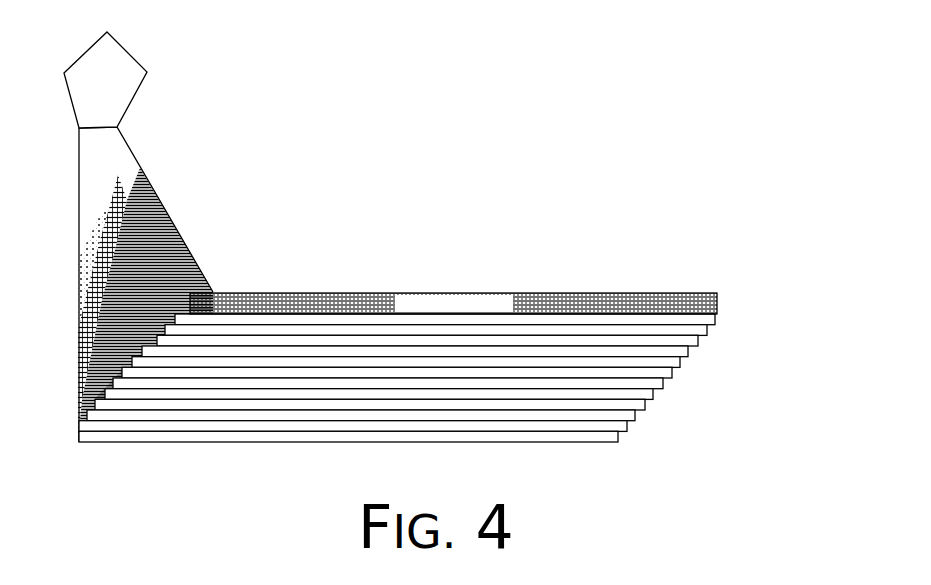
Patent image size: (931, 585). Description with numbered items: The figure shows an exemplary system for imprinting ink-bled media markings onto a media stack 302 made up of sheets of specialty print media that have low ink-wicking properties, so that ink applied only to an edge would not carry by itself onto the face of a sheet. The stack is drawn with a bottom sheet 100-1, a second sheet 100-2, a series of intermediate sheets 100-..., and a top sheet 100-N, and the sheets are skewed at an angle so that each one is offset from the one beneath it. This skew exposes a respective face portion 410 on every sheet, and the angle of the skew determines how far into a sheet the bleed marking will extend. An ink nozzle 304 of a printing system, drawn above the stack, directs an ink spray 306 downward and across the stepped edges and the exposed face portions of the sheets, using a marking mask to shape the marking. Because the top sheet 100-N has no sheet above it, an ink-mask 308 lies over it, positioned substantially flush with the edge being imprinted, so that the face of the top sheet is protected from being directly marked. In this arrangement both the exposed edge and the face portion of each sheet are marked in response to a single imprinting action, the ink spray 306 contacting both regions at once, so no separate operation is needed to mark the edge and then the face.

The ink nozzle 304 is at (125, 50).
The ink spray 306 is at (163, 200).
The ink-mask 308 is at (545, 291).
The media stack 302 is at (446, 403).
The face portion 410 is at (108, 395).
The sheet of print media 100-N is at (708, 326).
The sheets of print media 100-... is at (700, 419).
The sheet of print media 100-2 is at (628, 430).
The sheet of print media 100-1 is at (620, 440).